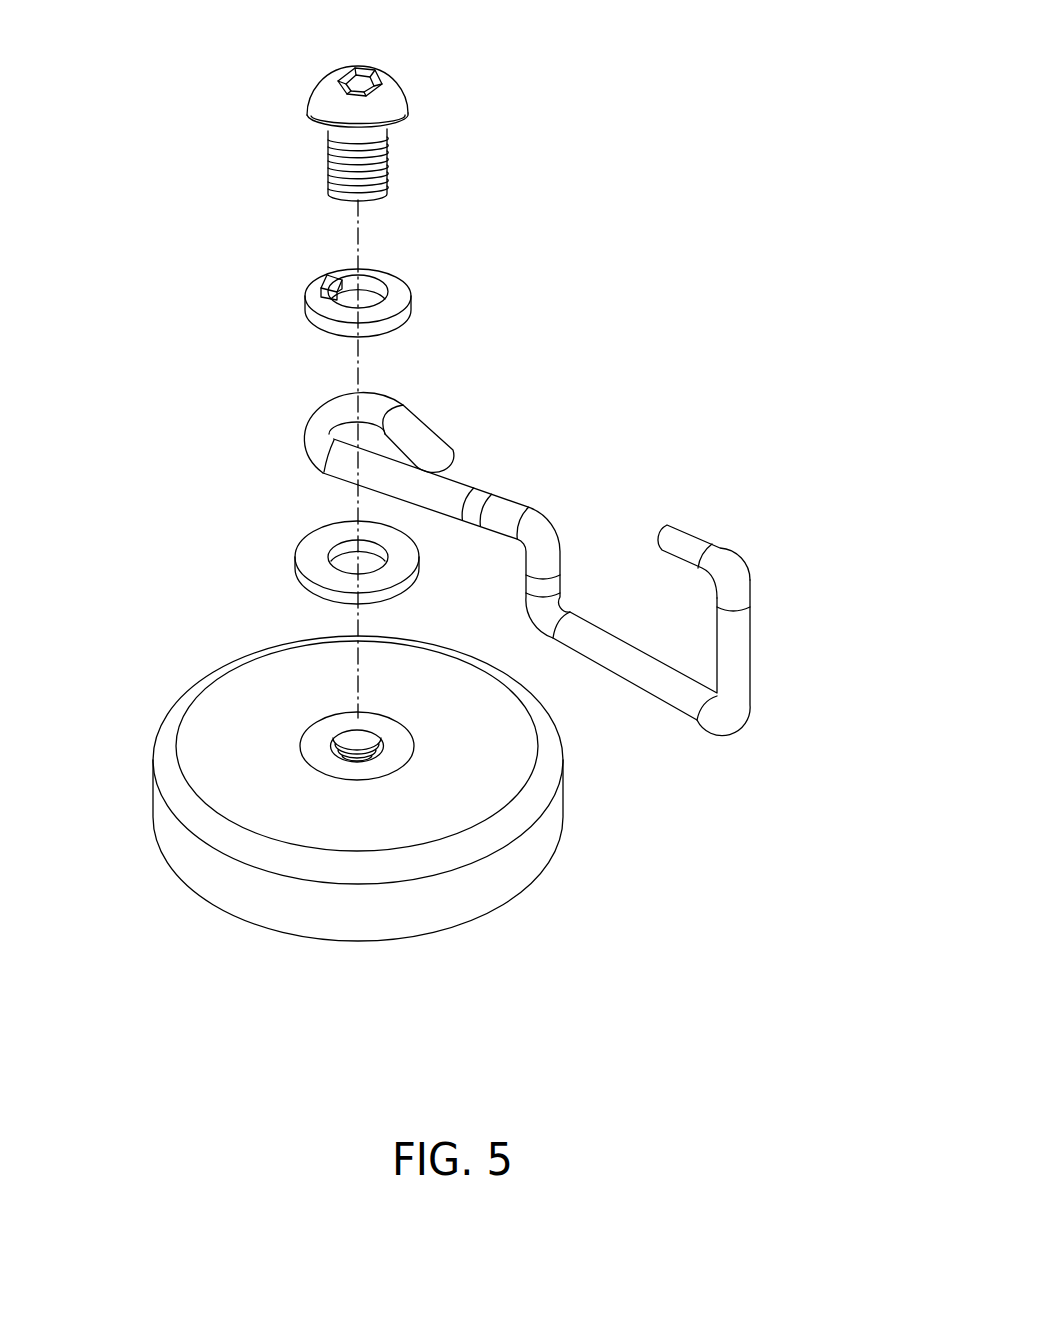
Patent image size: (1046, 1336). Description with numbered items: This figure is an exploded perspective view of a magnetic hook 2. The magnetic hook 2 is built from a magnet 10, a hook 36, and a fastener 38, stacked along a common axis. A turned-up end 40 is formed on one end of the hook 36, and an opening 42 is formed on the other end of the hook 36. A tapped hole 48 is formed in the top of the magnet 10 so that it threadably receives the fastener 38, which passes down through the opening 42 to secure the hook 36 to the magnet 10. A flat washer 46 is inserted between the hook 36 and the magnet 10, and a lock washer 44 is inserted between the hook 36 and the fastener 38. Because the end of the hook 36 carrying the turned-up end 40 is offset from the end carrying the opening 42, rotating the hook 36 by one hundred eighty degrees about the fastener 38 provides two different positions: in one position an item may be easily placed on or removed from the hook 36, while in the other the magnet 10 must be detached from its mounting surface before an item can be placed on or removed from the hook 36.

The magnetic hook 2 is at (502, 542).
The magnet 10 is at (273, 895).
The hook 36 is at (526, 490).
The fastener 38 is at (408, 84).
The turned-up end 40 is at (737, 557).
The opening 42 is at (332, 433).
The lock washer 44 is at (410, 290).
The flat washer 46 is at (295, 565).
The tapped hole 48 is at (333, 757).